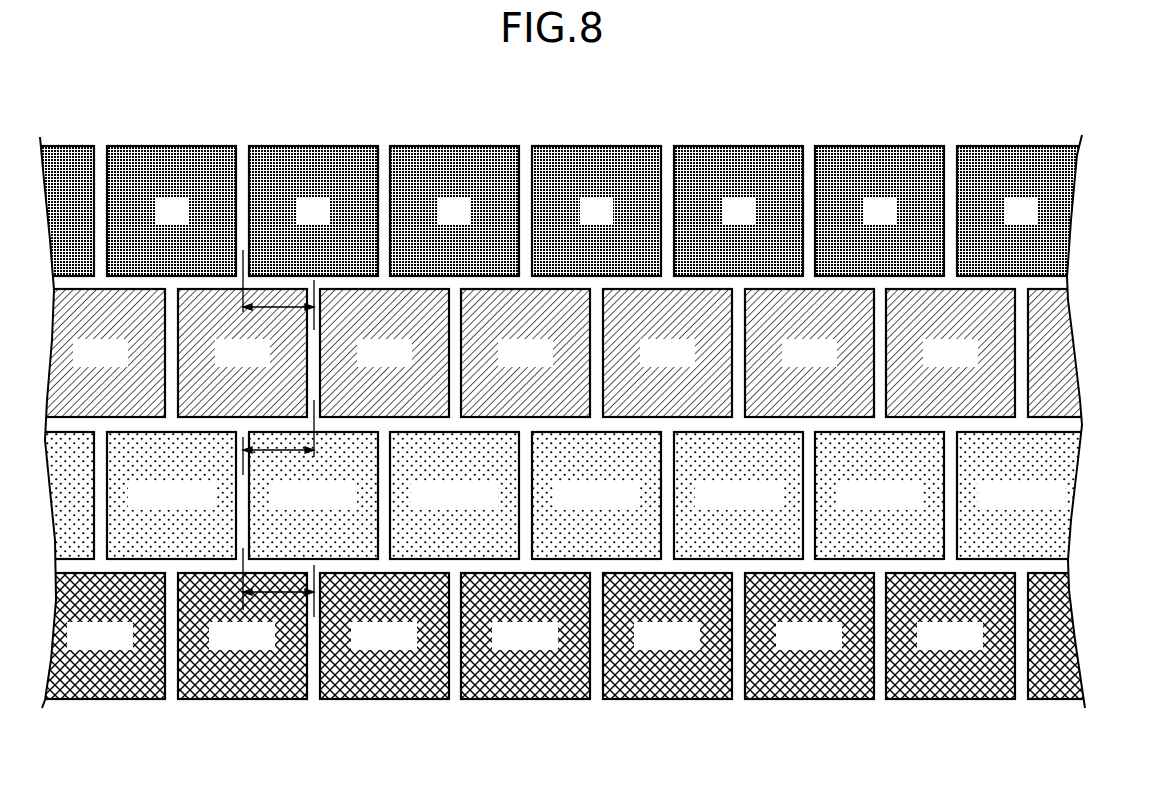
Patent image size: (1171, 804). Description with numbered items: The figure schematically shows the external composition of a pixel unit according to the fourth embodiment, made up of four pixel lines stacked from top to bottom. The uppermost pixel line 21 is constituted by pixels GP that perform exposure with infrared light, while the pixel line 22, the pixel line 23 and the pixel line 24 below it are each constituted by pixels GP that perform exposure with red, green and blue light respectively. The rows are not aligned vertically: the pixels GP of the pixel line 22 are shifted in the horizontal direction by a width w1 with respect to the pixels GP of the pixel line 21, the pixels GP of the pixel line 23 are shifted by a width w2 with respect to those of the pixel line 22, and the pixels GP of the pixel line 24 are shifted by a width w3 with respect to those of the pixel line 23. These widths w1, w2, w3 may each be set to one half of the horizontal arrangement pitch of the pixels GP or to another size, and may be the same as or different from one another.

The pixel line 21 is at (927, 183).
The pixel line 22 is at (998, 328).
The pixel line 23 is at (925, 465).
The pixel line 24 is at (993, 593).
The pixel GP is at (277, 147).
The width w1 is at (278, 307).
The width w2 is at (285, 450).
The width w3 is at (290, 595).